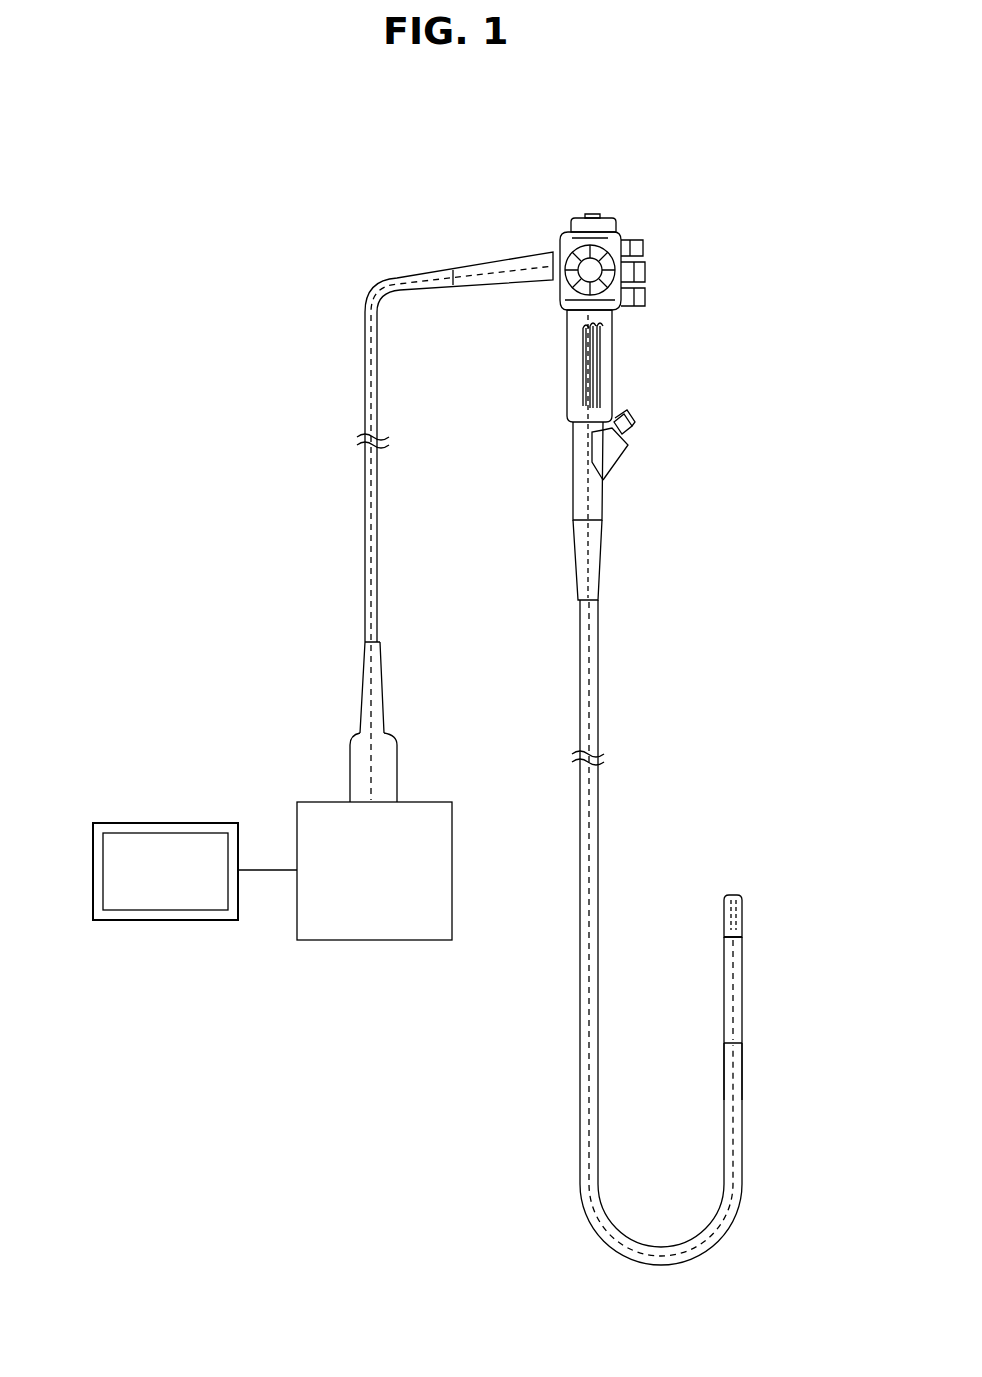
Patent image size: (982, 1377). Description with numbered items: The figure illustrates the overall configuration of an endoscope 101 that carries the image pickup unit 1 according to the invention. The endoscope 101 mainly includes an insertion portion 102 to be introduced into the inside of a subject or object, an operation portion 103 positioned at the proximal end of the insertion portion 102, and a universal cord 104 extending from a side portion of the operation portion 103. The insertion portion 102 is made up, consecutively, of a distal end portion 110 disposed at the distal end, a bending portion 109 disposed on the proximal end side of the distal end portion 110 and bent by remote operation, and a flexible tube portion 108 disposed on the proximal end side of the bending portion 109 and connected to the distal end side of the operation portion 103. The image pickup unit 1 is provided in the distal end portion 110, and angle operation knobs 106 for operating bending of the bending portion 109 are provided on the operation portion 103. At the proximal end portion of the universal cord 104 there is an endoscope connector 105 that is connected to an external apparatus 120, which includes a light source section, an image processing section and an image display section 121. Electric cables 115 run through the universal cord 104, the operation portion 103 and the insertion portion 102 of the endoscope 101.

The endoscope 101 is at (275, 230).
The insertion portion 102 is at (708, 757).
The operation portion 103 is at (506, 378).
The universal cord 104 is at (396, 288).
The endoscope connector 105 is at (350, 780).
The angle operation knobs 106 is at (560, 292).
The flexible tube portion 108 is at (688, 1263).
The bending portion 109 is at (743, 994).
The distal end portion 110 is at (743, 917).
The electric cables 115 is at (743, 1098).
The external apparatus 120 is at (372, 941).
The image display section 121 is at (163, 921).
The image pickup unit 1 is at (746, 895).